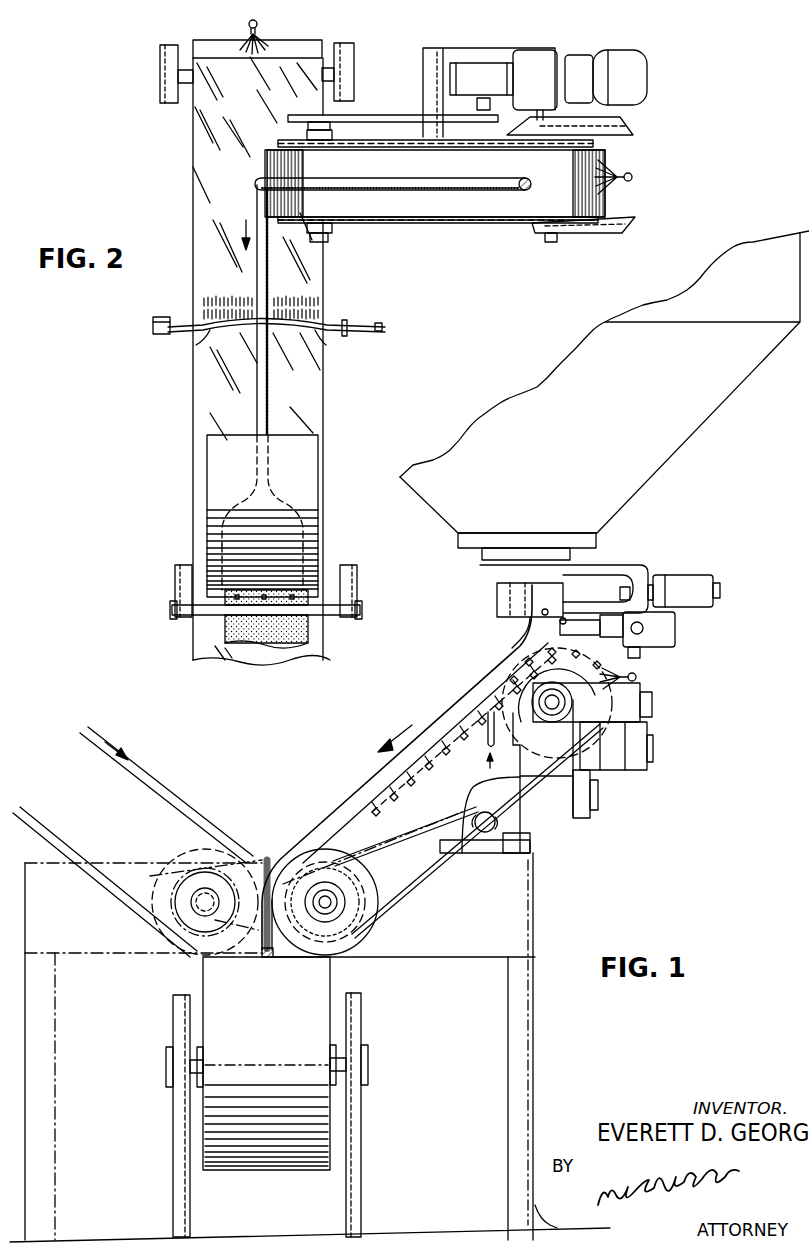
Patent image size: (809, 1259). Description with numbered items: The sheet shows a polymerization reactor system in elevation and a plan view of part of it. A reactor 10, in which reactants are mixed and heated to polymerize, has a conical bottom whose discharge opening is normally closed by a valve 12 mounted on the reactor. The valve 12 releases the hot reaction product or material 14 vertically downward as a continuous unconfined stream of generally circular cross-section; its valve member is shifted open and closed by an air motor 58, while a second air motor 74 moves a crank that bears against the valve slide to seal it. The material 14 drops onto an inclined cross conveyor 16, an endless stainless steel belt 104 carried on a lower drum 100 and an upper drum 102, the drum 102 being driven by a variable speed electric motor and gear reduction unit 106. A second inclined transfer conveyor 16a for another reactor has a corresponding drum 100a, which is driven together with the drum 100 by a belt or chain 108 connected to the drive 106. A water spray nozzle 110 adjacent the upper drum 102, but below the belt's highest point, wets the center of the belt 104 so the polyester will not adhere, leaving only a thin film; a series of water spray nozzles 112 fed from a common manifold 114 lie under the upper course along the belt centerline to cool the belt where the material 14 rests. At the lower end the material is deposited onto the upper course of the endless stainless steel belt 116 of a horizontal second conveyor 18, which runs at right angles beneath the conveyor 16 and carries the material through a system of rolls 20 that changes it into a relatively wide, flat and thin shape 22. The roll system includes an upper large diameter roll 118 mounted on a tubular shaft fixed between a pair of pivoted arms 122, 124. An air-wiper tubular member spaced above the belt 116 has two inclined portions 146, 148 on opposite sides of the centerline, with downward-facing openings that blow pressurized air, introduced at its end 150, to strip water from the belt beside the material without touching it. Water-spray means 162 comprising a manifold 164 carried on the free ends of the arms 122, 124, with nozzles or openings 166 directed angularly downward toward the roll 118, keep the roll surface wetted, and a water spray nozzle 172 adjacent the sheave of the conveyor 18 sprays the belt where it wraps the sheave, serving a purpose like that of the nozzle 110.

In FIG. 1, the reactor 10 is at (678, 447).
In FIG. 1, the valve 12 is at (610, 565).
In FIG. 2, the material 14 is at (407, 192).
In FIG. 1, the material 14 is at (453, 708).
In FIG. 2, the inclined cross conveyor 16 is at (438, 216).
In FIG. 1, the inclined cross conveyor 16 is at (528, 792).
In FIG. 1, the second inclined transfer conveyor 16a is at (186, 818).
In FIG. 2, the horizontal second conveyor 18 is at (326, 278).
In FIG. 1, the horizontal second conveyor 18 is at (333, 975).
In FIG. 2, the system of rolls 20 is at (318, 494).
In FIG. 2, the flat thin shape 22 is at (248, 636).
In FIG. 1, the air motor 58 is at (700, 575).
In FIG. 1, the air motor 74 is at (668, 635).
In FIG. 1, the drum 100 is at (355, 880).
In FIG. 1, the drum 100a is at (175, 868).
In FIG. 1, the drum 102 is at (585, 722).
In FIG. 2, the endless stainless steel belt 104 is at (600, 148).
In FIG. 1, the endless stainless steel belt 104 is at (560, 770).
In FIG. 2, the electric motor and gear reduction unit 106 is at (640, 58).
In FIG. 1, the electric motor and gear reduction unit 106 is at (640, 762).
In FIG. 2, the belt or chain 108 is at (390, 114).
In FIG. 1, the belt or chain 108 is at (258, 858).
In FIG. 2, the water spray nozzle 110 is at (630, 181).
In FIG. 1, the water spray nozzle 110 is at (640, 680).
In FIG. 1, the water spray nozzles 112 is at (455, 744).
In FIG. 1, the manifold 114 is at (460, 740).
In FIG. 2, the endless stainless steel belt 116 is at (197, 400).
In FIG. 2, the upper roll 118 is at (215, 497).
In FIG. 2, the arm 122 is at (355, 580).
In FIG. 2, the arm 124 is at (180, 578).
In FIG. 2, the tubular member portion 146 is at (320, 333).
In FIG. 2, the tubular member portion 148 is at (208, 333).
In FIG. 2, the tubular member end 150 is at (160, 333).
In FIG. 2, the water-spray means 162 is at (296, 612).
In FIG. 2, the manifold 164 is at (210, 614).
In FIG. 2, the nozzles or openings 166 is at (305, 615).
In FIG. 2, the water spray nozzle 172 is at (247, 26).